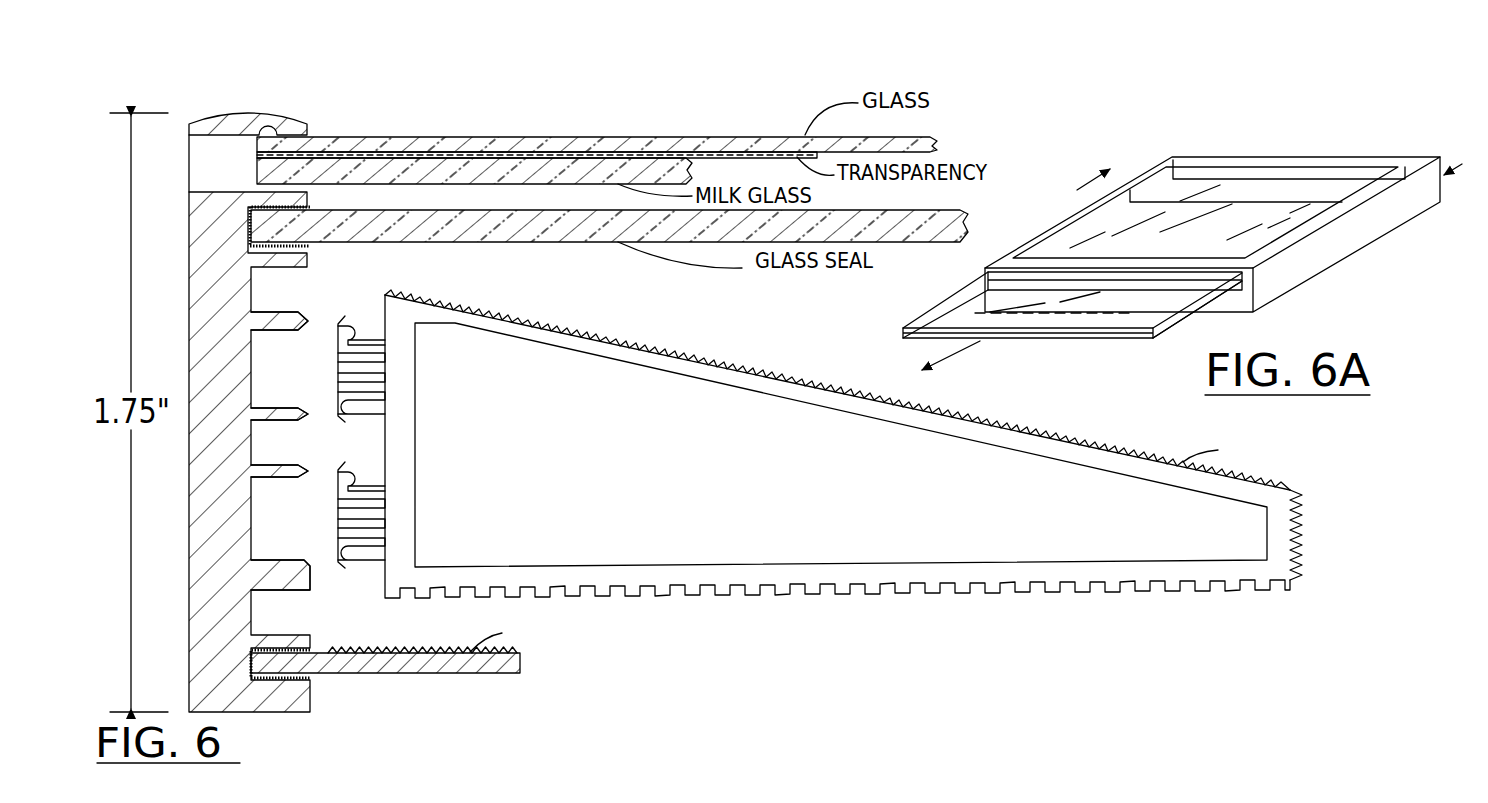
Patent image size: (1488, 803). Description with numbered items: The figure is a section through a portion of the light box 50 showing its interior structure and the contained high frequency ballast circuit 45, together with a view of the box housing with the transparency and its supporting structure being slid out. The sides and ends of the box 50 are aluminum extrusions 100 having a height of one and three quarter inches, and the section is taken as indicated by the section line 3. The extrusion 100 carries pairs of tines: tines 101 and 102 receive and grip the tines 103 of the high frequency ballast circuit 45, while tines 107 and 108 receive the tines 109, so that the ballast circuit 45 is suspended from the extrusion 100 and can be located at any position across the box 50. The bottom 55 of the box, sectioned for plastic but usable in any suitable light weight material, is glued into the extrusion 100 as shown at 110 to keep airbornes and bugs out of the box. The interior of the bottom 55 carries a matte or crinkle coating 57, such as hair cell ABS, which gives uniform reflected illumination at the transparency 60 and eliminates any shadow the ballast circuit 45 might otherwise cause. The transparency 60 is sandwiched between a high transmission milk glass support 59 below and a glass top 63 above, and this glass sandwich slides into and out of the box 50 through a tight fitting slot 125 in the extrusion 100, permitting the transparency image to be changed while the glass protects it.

In FIG. 6A, the section line indicator 3 is at (1269, 169).
In FIG. 6, the high frequency ballast circuit 45 is at (770, 540).
In FIG. 6A, the box 50 is at (1374, 225).
In FIG. 6, the bottom 55 is at (440, 673).
In FIG. 6, the matte or crinkle coating 57 is at (857, 546).
In FIG. 6, the milk glass support 59 is at (455, 184).
In FIG. 6A, the milk glass support 59 is at (1143, 340).
In FIG. 6, the transparency 60 is at (715, 160).
In FIG. 6A, the transparency 60 is at (988, 336).
In FIG. 6, the glass top 63 is at (585, 137).
In FIG. 6A, the glass top 63 is at (1163, 313).
In FIG. 6, the aluminum extrusion 100 is at (233, 634).
In FIG. 6, the tine 101 is at (258, 321).
In FIG. 6, the tine 102 is at (258, 418).
In FIG. 6, the tine 103 is at (337, 372).
In FIG. 6, the tine 107 is at (260, 474).
In FIG. 6, the tine 108 is at (276, 568).
In FIG. 6, the tine 109 is at (337, 514).
In FIG. 6, the glue joint 110 is at (310, 677).
In FIG. 6, the slot 125 is at (224, 185).
In FIG. 6A, the slot 125 is at (980, 280).